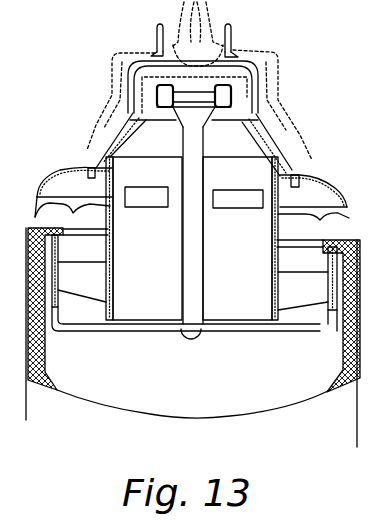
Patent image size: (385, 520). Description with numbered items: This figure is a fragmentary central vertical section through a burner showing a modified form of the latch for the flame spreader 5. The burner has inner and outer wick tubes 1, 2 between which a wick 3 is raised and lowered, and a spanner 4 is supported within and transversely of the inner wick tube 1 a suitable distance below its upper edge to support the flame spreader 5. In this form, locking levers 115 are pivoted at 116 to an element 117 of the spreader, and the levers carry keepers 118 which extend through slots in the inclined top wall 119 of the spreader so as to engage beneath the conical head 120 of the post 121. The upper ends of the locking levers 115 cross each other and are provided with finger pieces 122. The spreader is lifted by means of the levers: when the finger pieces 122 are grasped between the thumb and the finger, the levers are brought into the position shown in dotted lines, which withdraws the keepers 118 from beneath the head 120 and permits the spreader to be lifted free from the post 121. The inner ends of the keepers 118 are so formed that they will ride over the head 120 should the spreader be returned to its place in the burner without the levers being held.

The inner wick tube 1 is at (341, 355).
The outer wick tube 2 is at (358, 355).
The wick 3 is at (353, 282).
The spanner 4 is at (216, 333).
The flame spreader 5 is at (106, 128).
The locking levers 115 is at (246, 100).
The pivot 116 is at (92, 168).
The element of the spreader 117 is at (57, 186).
The keepers 118 is at (180, 113).
The inclined top wall 119 is at (258, 133).
The conical head 120 is at (172, 142).
The post 121 is at (197, 228).
The finger pieces 122 is at (157, 32).